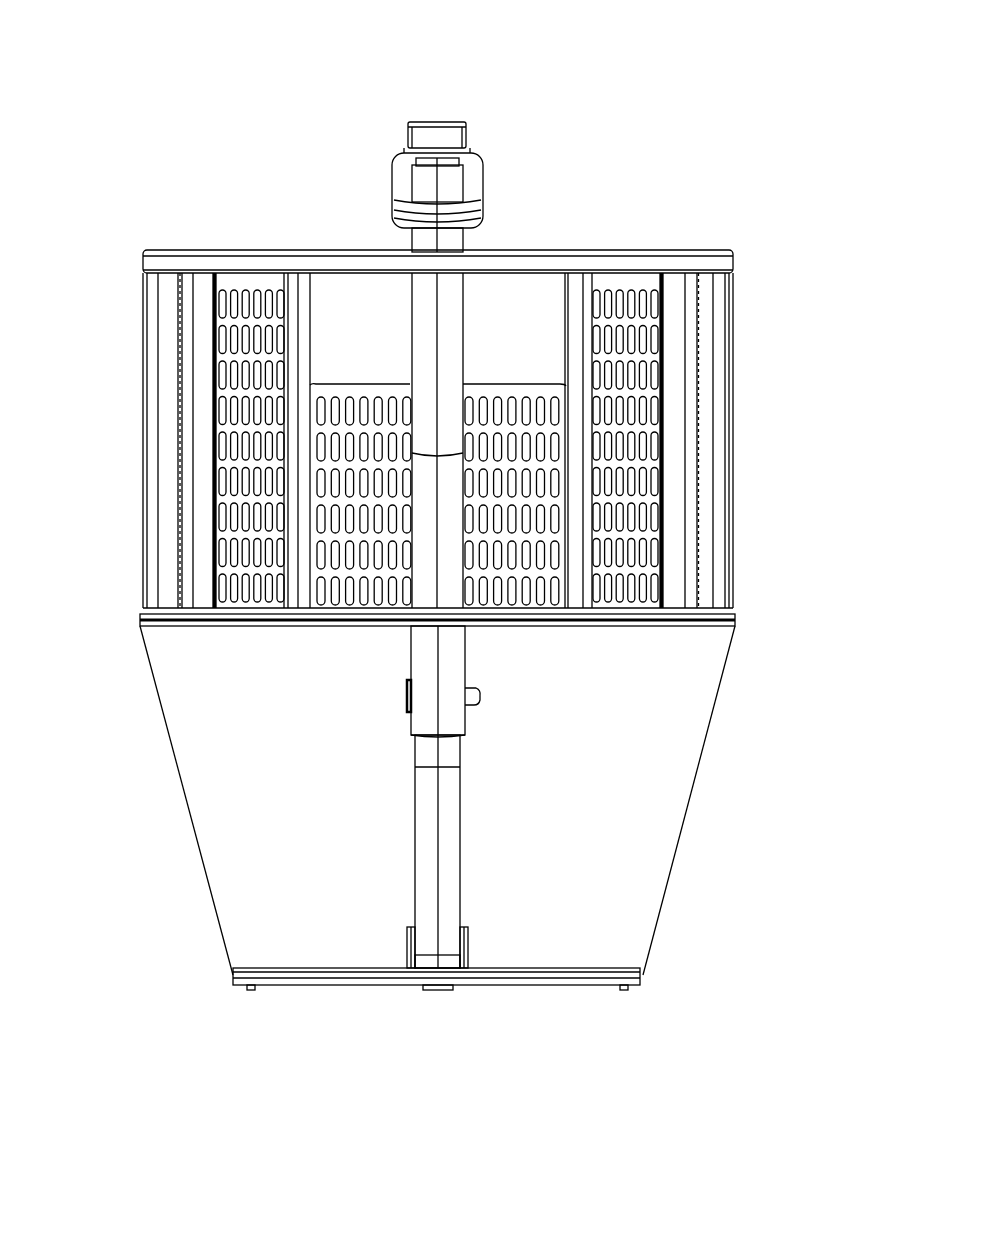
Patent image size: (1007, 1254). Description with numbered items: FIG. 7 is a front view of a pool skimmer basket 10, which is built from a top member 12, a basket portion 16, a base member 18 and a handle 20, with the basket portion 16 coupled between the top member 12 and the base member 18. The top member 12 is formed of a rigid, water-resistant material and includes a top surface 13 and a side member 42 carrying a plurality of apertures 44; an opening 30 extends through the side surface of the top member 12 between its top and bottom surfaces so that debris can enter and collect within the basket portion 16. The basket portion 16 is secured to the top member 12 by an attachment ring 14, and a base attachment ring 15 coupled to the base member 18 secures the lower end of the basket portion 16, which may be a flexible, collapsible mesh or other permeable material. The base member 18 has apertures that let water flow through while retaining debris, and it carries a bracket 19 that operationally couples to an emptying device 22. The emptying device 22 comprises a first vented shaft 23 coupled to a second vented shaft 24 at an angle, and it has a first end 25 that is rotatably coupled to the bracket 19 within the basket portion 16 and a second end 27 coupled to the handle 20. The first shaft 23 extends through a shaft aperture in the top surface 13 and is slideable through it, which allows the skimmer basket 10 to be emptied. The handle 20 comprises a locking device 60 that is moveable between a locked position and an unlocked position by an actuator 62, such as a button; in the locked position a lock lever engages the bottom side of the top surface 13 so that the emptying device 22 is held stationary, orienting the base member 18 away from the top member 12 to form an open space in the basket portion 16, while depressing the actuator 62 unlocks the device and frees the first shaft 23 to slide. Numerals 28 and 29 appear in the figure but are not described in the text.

The pool skimmer basket 10 is at (206, 128).
The top member 12 is at (766, 242).
The top surface 13 is at (664, 248).
The attachment ring 14 is at (622, 620).
The base attachment ring 15 is at (312, 972).
The basket portion 16 is at (330, 840).
The base member 18 is at (466, 984).
The bracket 19 is at (462, 940).
The handle 20 is at (435, 192).
The emptying device 22 is at (345, 706).
The first vented shaft 23 is at (382, 348).
The second vented shaft 24 is at (445, 826).
The first end 25 is at (428, 942).
The second end 27 is at (415, 243).
The upper shaft 28 is at (425, 366).
The shaft section 29 is at (425, 548).
The opening 30 is at (572, 535).
The side member 42 is at (632, 290).
The apertures 44 is at (644, 373).
The locking device 60 is at (462, 80).
The actuator 62 is at (440, 128).